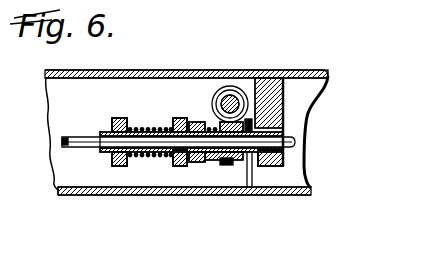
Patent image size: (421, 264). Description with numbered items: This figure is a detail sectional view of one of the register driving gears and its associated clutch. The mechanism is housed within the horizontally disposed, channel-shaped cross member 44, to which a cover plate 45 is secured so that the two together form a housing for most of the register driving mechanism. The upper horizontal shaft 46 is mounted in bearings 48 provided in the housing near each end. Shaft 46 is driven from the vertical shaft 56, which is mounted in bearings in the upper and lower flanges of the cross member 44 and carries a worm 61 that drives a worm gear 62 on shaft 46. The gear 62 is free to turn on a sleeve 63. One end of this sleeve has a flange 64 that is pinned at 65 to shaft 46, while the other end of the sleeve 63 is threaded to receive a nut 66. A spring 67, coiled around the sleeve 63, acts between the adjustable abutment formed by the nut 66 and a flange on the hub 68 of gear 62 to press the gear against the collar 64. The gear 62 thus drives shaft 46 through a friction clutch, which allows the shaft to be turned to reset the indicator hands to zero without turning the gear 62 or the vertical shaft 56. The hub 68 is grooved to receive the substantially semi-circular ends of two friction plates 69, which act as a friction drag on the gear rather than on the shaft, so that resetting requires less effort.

The cross member 44 is at (311, 70).
The cover plate 45 is at (64, 194).
The upper shaft 46 is at (296, 144).
The bearings 48 is at (285, 118).
The vertical shaft 56 is at (242, 92).
The worm 61 is at (228, 86).
The worm gear 62 is at (226, 162).
The sleeve 63 is at (110, 124).
The flange 64 is at (256, 187).
The pin 65 is at (244, 190).
The nut 66 is at (119, 167).
The spring 67 is at (177, 127).
The hub 68 is at (217, 164).
The friction plates 69 is at (204, 127).